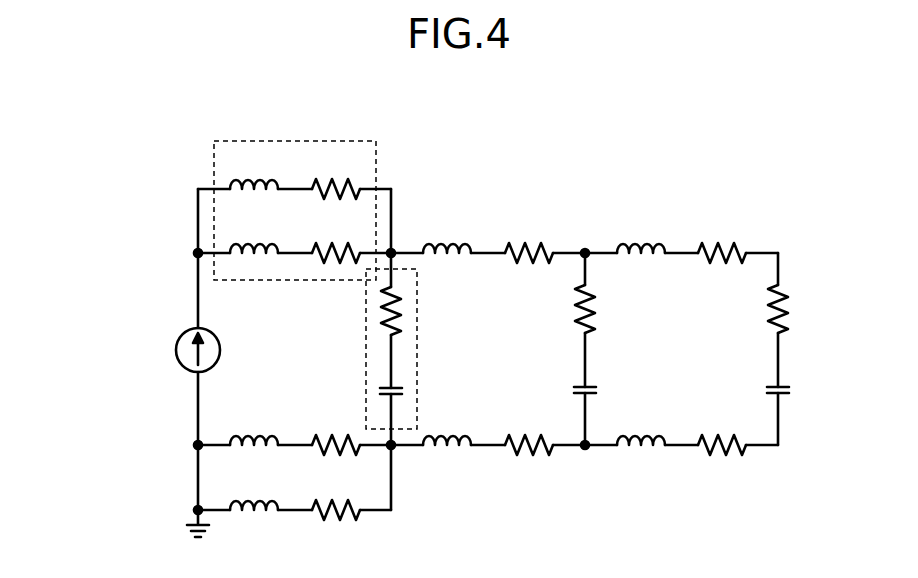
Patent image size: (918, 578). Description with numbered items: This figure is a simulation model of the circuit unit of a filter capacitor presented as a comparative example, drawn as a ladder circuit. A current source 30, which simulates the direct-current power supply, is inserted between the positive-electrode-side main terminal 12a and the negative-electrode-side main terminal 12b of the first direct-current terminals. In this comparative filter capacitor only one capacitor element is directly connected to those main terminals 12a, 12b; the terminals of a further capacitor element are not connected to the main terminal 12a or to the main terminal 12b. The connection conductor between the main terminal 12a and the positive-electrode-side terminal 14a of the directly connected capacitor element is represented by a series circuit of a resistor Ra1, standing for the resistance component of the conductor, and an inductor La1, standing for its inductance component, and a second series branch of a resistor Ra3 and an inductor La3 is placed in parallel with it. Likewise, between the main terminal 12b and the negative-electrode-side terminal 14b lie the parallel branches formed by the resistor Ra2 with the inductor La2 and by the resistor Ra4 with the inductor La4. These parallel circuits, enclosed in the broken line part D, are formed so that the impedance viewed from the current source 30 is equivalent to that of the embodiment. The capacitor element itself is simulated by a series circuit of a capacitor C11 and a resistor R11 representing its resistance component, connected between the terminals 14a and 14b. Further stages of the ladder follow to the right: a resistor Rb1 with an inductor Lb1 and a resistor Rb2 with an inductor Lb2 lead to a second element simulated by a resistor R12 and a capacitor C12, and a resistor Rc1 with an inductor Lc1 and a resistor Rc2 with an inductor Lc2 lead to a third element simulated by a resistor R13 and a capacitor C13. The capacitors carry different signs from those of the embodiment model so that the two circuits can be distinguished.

The positive-electrode-side main terminal 12a is at (196, 253).
The negative-electrode-side main terminal 12b is at (196, 445).
The positive-electrode-side terminal 14a is at (392, 253).
The negative-electrode-side terminal 14b is at (392, 445).
The current source 30 is at (183, 335).
The broken line part D is at (243, 141).
The inductor La1 is at (254, 235).
The resistor Ra1 is at (336, 240).
The inductor La2 is at (254, 460).
The resistor Ra2 is at (336, 460).
The inductor La3 is at (254, 171).
The resistor Ra3 is at (336, 176).
The inductor La4 is at (254, 524).
The resistor Ra4 is at (336, 524).
The inductor Lb1 is at (447, 235).
The resistor Rb1 is at (529, 240).
The inductor Lb2 is at (447, 459).
The resistor Rb2 is at (529, 459).
The inductor Lc1 is at (641, 235).
The resistor Rc1 is at (722, 240).
The inductor Lc2 is at (641, 459).
The resistor Rc2 is at (722, 459).
The resistor R11 is at (369, 311).
The capacitor C11 is at (369, 390).
The resistor R12 is at (562, 309).
The capacitor C12 is at (563, 391).
The resistor R13 is at (755, 309).
The capacitor C13 is at (756, 391).